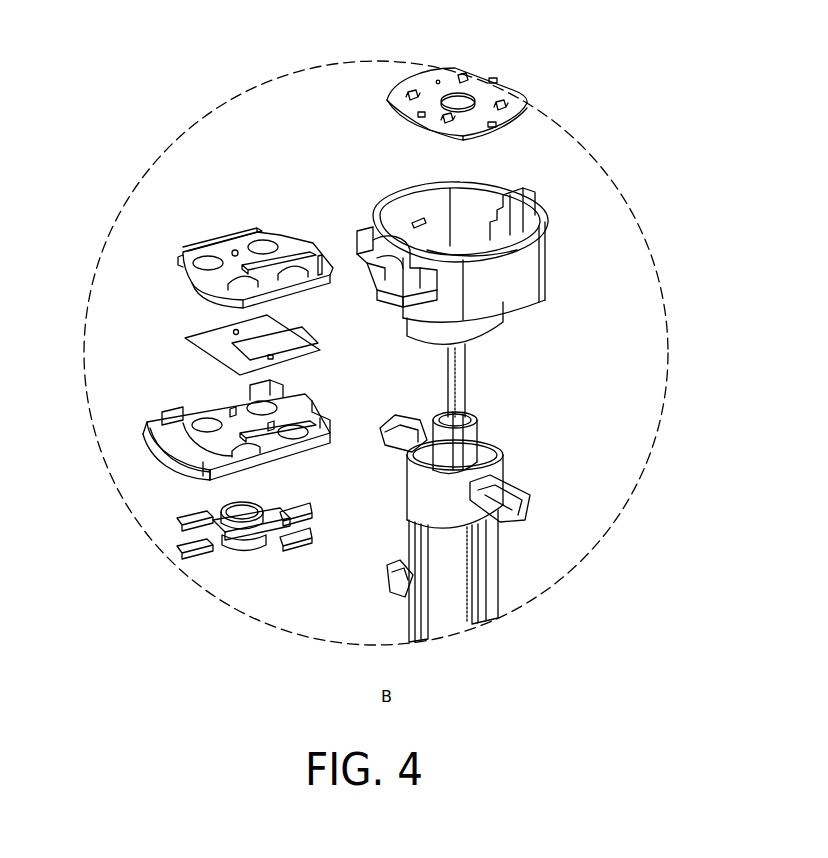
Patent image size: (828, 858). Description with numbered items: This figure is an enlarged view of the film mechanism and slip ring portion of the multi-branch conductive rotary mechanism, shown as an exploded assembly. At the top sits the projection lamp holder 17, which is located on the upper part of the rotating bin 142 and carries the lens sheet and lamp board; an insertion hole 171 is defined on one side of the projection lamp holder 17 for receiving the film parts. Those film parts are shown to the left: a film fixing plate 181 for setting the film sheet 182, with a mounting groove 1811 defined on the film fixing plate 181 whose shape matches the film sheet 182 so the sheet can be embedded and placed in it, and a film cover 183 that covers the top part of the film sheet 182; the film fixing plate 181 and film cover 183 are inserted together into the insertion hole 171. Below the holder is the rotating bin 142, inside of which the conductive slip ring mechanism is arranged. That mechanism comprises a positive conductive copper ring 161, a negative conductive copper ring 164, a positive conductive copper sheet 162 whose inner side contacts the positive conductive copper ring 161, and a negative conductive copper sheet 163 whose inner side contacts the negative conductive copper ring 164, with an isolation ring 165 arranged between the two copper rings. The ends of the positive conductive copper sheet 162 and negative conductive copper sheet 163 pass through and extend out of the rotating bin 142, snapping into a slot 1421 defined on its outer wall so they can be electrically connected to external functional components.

The projection lamp holder 17 is at (500, 283).
The insertion hole 171 is at (363, 228).
The rotating bin 142 is at (437, 490).
The slot 1421 is at (497, 450).
The film fixing plate 181 is at (230, 455).
The mounting groove 1811 is at (205, 462).
The film sheet 182 is at (200, 337).
The film cover 183 is at (223, 240).
The positive conductive copper ring 161 is at (227, 512).
The positive conductive copper sheet 162 is at (184, 530).
The negative conductive copper sheet 163 is at (192, 540).
The negative conductive copper ring 164 is at (237, 555).
The isolation ring 165 is at (253, 540).